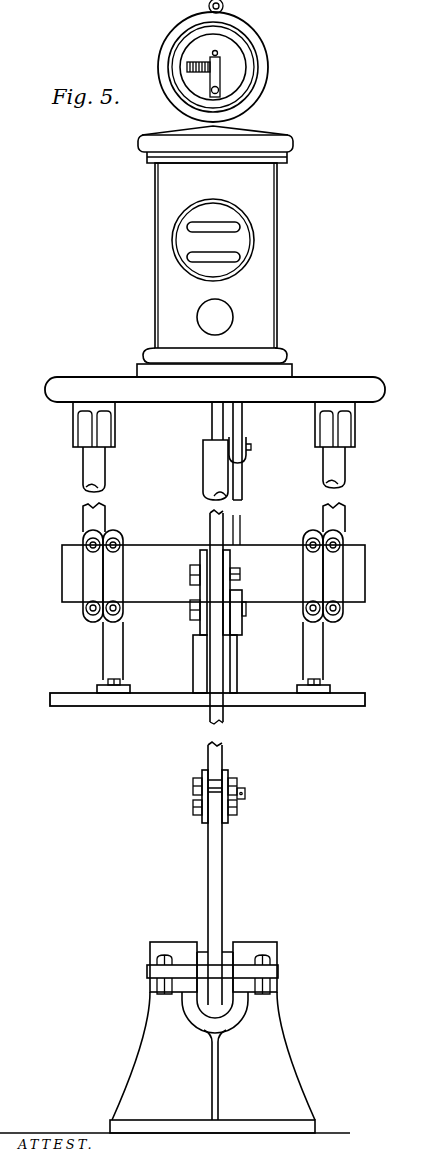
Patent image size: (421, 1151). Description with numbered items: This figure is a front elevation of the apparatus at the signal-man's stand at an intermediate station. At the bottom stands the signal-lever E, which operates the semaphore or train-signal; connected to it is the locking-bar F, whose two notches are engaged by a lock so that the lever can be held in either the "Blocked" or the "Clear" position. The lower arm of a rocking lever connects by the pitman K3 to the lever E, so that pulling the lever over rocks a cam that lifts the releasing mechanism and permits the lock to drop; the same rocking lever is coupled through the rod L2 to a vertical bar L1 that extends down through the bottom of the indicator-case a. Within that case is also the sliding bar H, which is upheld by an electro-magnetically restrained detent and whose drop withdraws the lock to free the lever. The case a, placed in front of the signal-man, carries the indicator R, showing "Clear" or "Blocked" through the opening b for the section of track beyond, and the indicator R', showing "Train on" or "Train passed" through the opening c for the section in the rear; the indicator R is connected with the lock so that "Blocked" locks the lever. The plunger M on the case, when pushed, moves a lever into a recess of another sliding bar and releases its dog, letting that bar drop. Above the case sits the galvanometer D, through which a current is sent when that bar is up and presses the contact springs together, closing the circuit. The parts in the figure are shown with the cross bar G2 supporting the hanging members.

The galvanometer D is at (268, 69).
The indicator-case a is at (216, 255).
The opening b is at (186, 222).
The indicator R is at (216, 240).
The opening c is at (186, 262).
The indicator R' is at (232, 270).
The plunger M is at (215, 317).
The sliding bar H is at (211, 424).
The vertical bar L1 is at (238, 422).
The rod L2 is at (244, 484).
The cross bar G2 is at (213, 573).
The locking-bar F is at (224, 604).
The pitman K3 is at (230, 796).
The signal-lever E is at (224, 757).